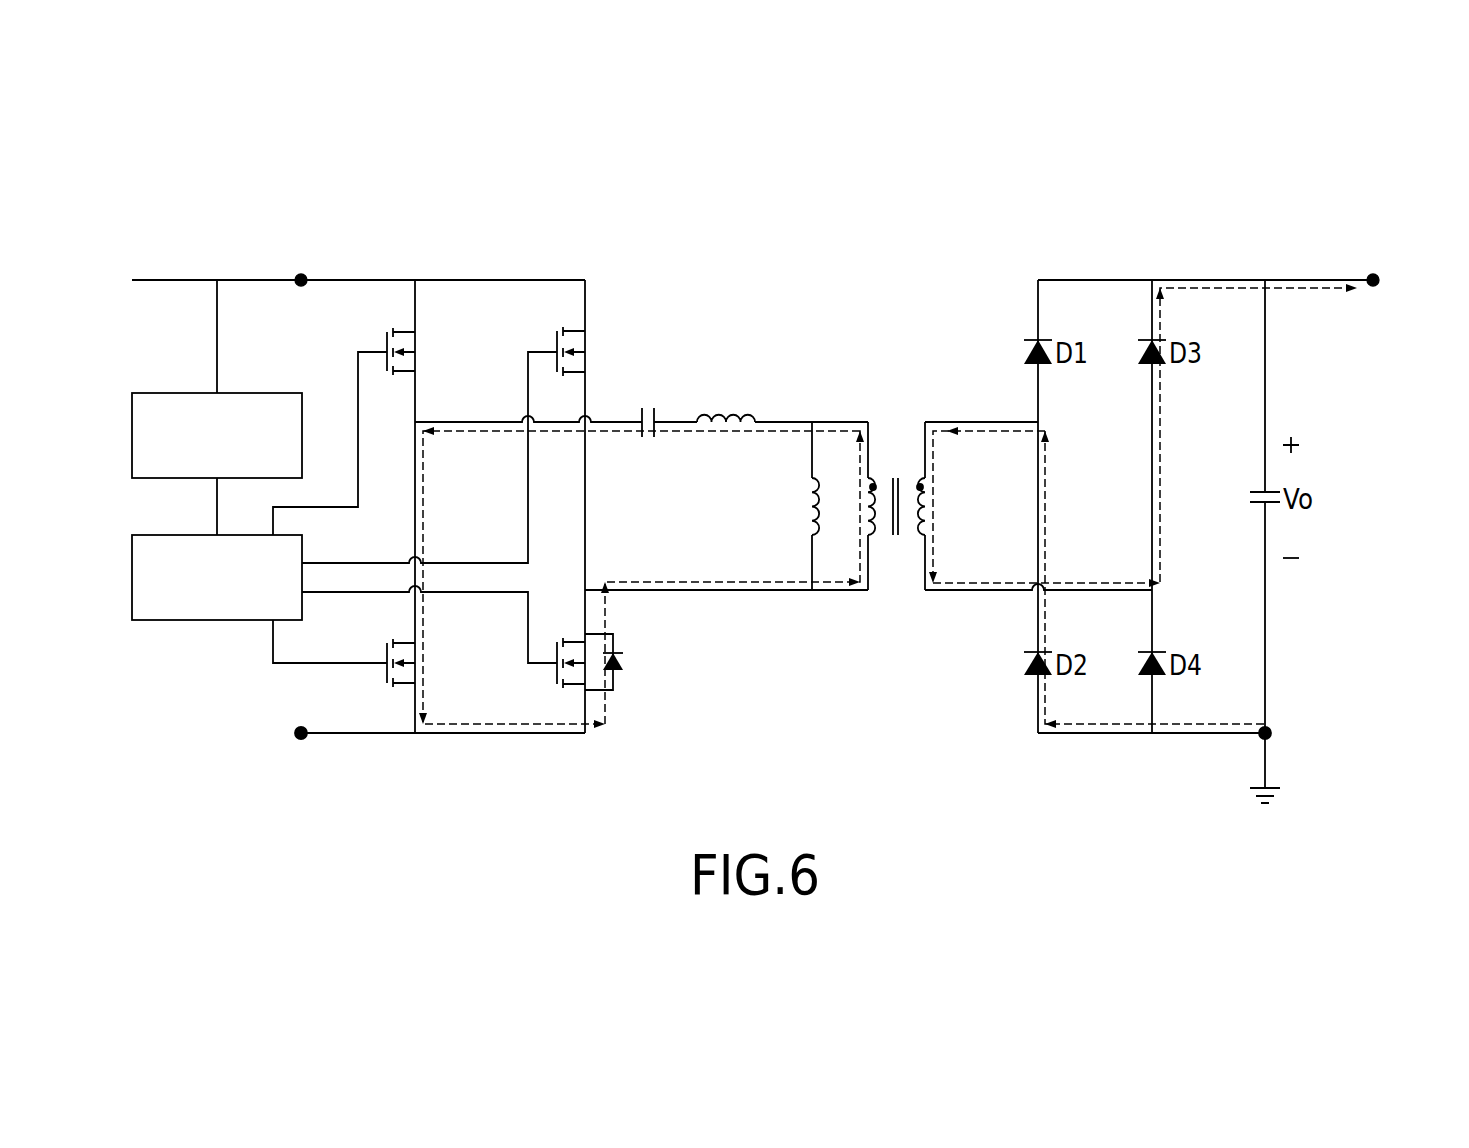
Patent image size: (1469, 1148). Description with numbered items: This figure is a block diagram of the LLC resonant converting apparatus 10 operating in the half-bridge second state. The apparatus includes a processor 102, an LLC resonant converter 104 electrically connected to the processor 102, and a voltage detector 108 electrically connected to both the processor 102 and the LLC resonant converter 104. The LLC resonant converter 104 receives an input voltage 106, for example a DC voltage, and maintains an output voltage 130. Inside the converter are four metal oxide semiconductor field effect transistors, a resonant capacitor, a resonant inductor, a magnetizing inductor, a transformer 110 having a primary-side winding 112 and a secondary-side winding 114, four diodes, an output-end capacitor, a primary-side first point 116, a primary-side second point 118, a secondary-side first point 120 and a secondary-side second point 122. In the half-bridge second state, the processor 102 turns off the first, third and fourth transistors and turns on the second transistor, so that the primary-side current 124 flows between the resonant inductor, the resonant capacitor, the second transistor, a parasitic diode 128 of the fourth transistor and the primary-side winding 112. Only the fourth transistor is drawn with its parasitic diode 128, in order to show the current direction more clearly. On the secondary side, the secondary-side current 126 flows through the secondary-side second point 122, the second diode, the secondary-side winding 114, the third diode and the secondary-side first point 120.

The LLC resonant converting apparatus 10 is at (766, 138).
The processor 102 is at (205, 540).
The LLC resonant converter 104 is at (780, 262).
The input voltage 106 is at (160, 280).
The voltage detector 108 is at (205, 398).
The transformer 110 is at (900, 507).
The primary-side winding 112 is at (880, 545).
The secondary-side winding 114 is at (913, 545).
The primary-side first point 116 is at (301, 262).
The primary-side second point 118 is at (301, 750).
The secondary-side first point 120 is at (1375, 254).
The secondary-side second point 122 is at (1286, 732).
The primary-side current 124 is at (483, 440).
The secondary-side current 126 is at (1205, 724).
The parasitic diode 128 is at (625, 662).
The output voltage 130 is at (1317, 280).